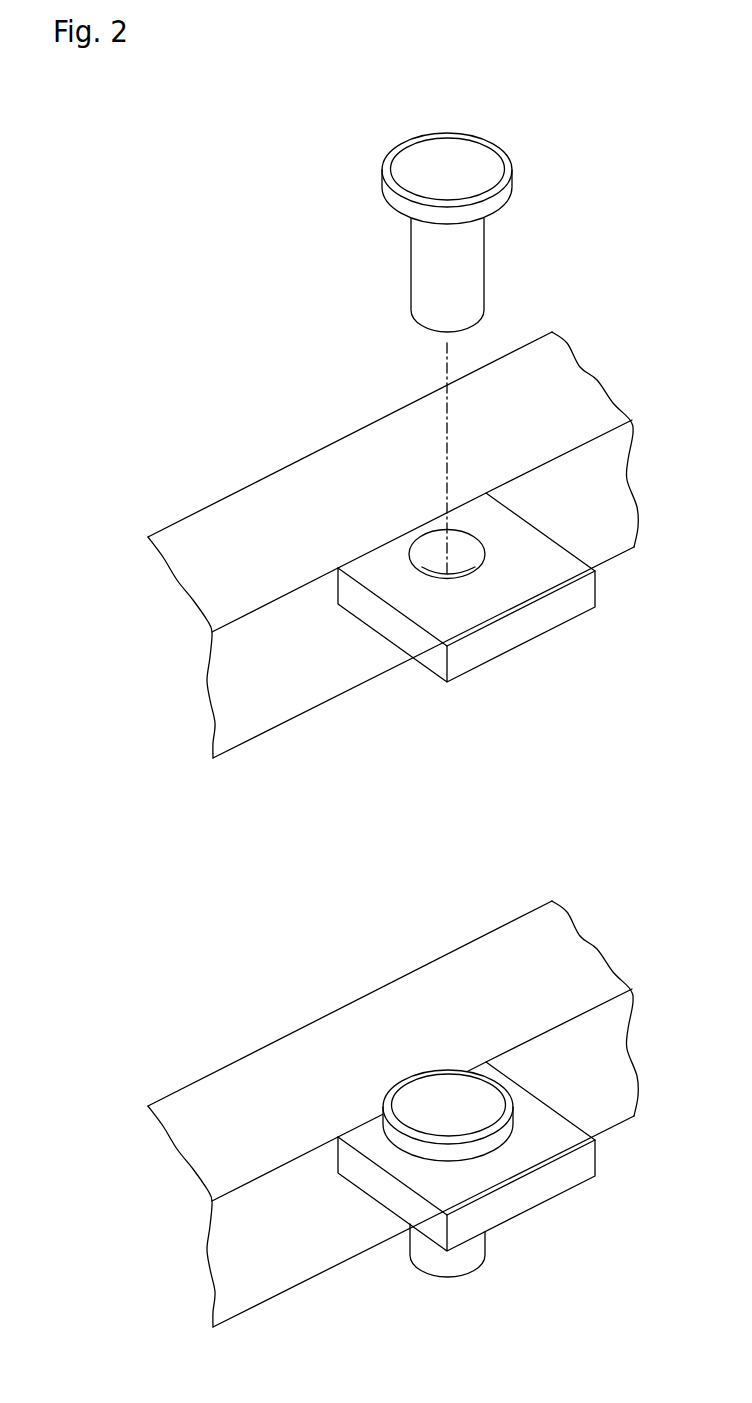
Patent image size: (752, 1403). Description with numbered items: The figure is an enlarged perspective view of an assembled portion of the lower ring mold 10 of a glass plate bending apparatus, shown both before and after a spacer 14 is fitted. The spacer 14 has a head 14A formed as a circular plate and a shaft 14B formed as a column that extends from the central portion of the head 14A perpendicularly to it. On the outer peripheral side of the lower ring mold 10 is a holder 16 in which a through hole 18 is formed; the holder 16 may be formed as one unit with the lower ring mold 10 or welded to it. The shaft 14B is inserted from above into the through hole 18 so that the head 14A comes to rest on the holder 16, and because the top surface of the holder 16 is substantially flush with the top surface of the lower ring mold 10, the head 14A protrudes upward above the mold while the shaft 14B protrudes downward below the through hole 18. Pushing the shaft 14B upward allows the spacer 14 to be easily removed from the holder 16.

The lower ring mold 10 is at (266, 509).
The spacer 14 is at (466, 690).
The head 14A is at (438, 155).
The shaft 14B is at (430, 270).
The holder 16 is at (466, 804).
The through hole 18 is at (438, 545).